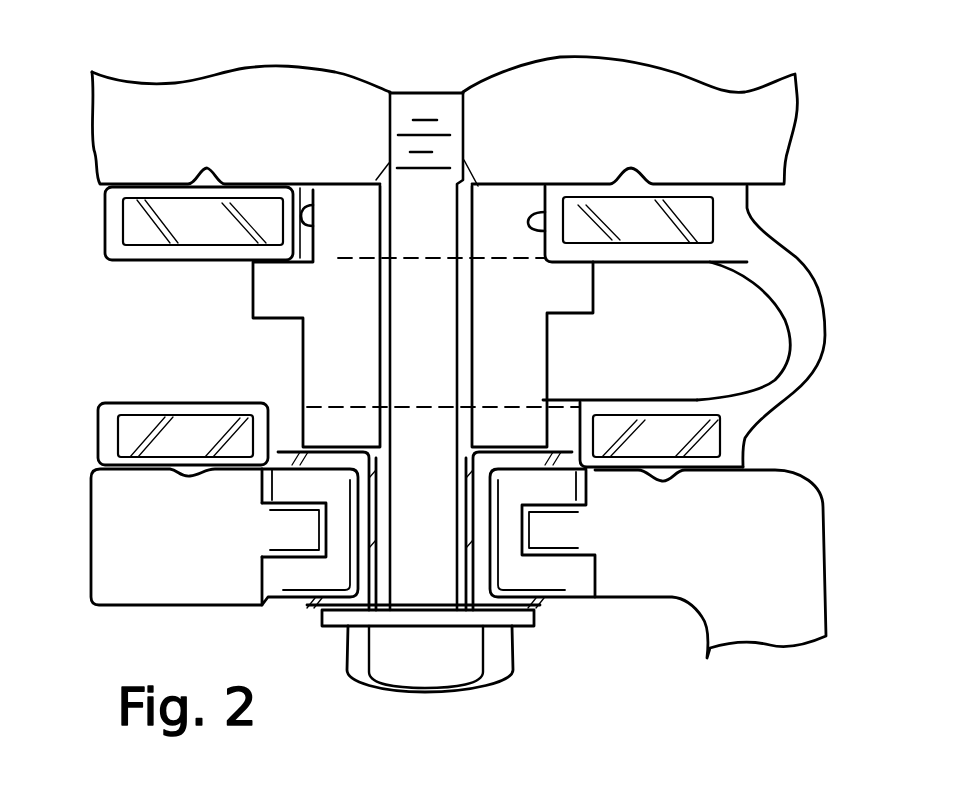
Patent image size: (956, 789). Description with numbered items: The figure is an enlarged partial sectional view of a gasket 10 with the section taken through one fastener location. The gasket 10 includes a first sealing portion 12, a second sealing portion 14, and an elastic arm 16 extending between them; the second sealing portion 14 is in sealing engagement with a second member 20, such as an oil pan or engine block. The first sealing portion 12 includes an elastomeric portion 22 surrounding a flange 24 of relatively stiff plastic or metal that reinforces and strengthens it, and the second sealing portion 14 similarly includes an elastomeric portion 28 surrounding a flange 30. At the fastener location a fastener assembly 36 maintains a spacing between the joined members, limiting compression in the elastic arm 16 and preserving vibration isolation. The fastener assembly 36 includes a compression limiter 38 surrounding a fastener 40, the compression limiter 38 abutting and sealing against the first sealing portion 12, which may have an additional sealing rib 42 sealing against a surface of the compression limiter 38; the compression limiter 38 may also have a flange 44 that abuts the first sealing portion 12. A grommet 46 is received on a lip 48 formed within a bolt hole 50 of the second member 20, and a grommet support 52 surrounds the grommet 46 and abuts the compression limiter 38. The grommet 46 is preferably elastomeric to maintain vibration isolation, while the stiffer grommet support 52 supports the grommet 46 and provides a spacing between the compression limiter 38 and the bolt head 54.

The gasket 10 is at (824, 226).
The first sealing portion 12 is at (78, 217).
The second sealing portion 14 is at (80, 442).
The elastic arm 16 is at (833, 313).
The second member 20 is at (823, 507).
The elastomeric portion 22 is at (653, 262).
The flange 24 is at (183, 247).
The elastomeric portion 28 is at (602, 400).
The flange 30 is at (195, 417).
The fastener assembly 36 is at (550, 646).
The compression limiter 38 is at (303, 360).
The fastener 40 is at (408, 90).
The additional sealing rib 42 is at (547, 258).
The flange 44 is at (598, 285).
The grommet 46 is at (283, 600).
The lip 48 is at (315, 535).
The bolt hole 50 is at (595, 580).
The grommet support 52 is at (540, 610).
The bolt head 54 is at (506, 668).